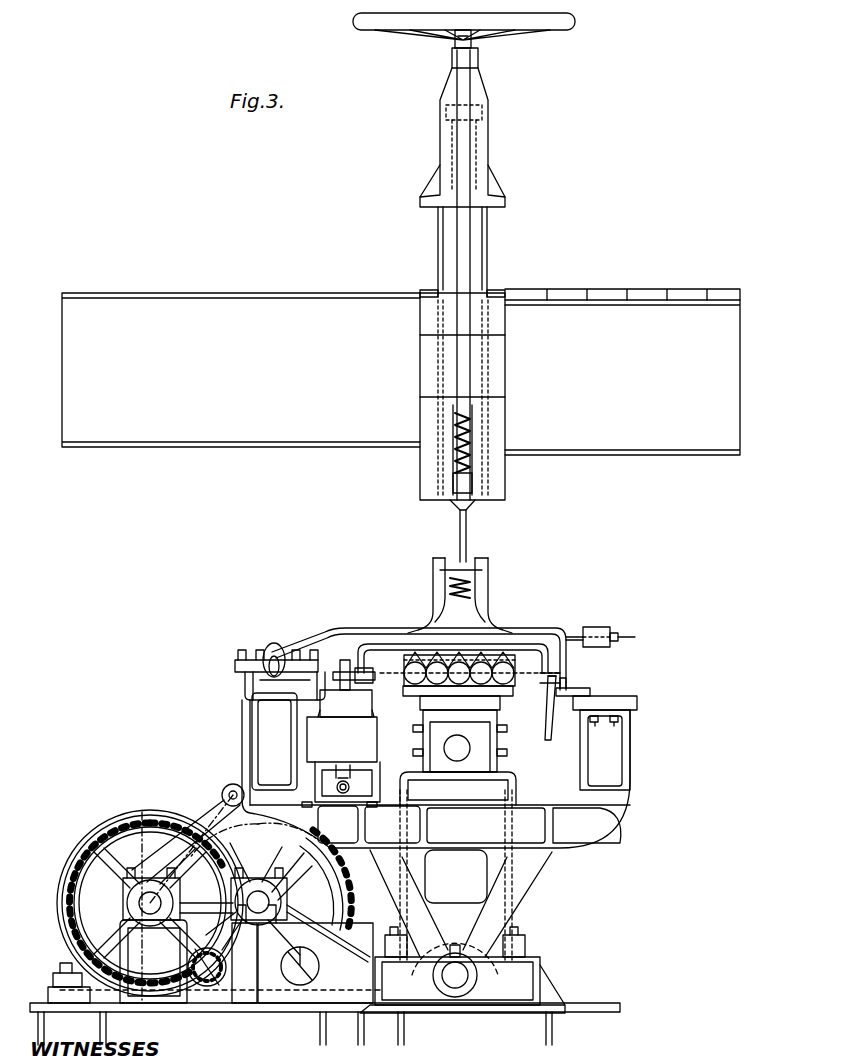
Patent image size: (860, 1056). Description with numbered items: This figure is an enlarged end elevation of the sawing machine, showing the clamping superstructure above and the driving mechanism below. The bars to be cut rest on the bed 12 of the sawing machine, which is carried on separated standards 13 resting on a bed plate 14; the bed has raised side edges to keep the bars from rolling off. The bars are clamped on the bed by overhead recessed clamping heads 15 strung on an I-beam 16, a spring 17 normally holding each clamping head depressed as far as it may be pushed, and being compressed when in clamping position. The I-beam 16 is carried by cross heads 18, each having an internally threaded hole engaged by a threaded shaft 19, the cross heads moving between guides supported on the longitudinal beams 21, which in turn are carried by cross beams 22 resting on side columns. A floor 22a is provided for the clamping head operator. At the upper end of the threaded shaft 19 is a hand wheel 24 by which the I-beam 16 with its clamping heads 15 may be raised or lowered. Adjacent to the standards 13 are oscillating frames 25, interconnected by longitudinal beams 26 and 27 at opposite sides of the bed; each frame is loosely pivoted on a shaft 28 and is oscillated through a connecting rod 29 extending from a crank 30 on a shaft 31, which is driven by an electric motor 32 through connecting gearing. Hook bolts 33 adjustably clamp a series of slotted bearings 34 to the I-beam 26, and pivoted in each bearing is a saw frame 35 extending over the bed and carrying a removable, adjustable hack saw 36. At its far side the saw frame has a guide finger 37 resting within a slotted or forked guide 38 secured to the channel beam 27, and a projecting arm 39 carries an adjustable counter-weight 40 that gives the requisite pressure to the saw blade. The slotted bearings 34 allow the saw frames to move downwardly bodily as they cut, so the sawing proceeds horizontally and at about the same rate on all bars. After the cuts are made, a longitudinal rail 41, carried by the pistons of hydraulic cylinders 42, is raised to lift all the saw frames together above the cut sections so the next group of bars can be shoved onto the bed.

The bed 12 is at (470, 696).
The standards 13 is at (500, 788).
The bed plate 14 is at (520, 992).
The clamping heads 15 is at (488, 652).
The I-beam 16 is at (466, 535).
The spring 17 is at (488, 585).
The cross heads 18 is at (470, 465).
The threaded shaft 19 is at (463, 256).
The longitudinal beams 21 is at (490, 238).
The cross beams 22 is at (401, 374).
The floor 22a is at (607, 296).
The hand wheels 24 is at (422, 22).
The oscillating frames 25 is at (262, 752).
The longitudinal beam 26 is at (244, 688).
The longitudinal beam 27 is at (639, 699).
The shaft 28 is at (457, 985).
The connecting rod 29 is at (200, 824).
The crank 30 is at (140, 820).
The shaft 31 is at (152, 920).
The electric motor 32 is at (95, 832).
The hook bolts 33 is at (234, 663).
The slotted bearings 34 is at (268, 656).
The saw frame 35 is at (380, 645).
The hack saw 36 is at (396, 682).
The guide finger 37 is at (547, 700).
The slotted or forked guide 38 is at (575, 696).
The projecting arm 39 is at (634, 640).
The counter-weight 40 is at (598, 632).
The longitudinal rail 41 is at (340, 684).
The hydraulic cylinders 42 is at (341, 748).